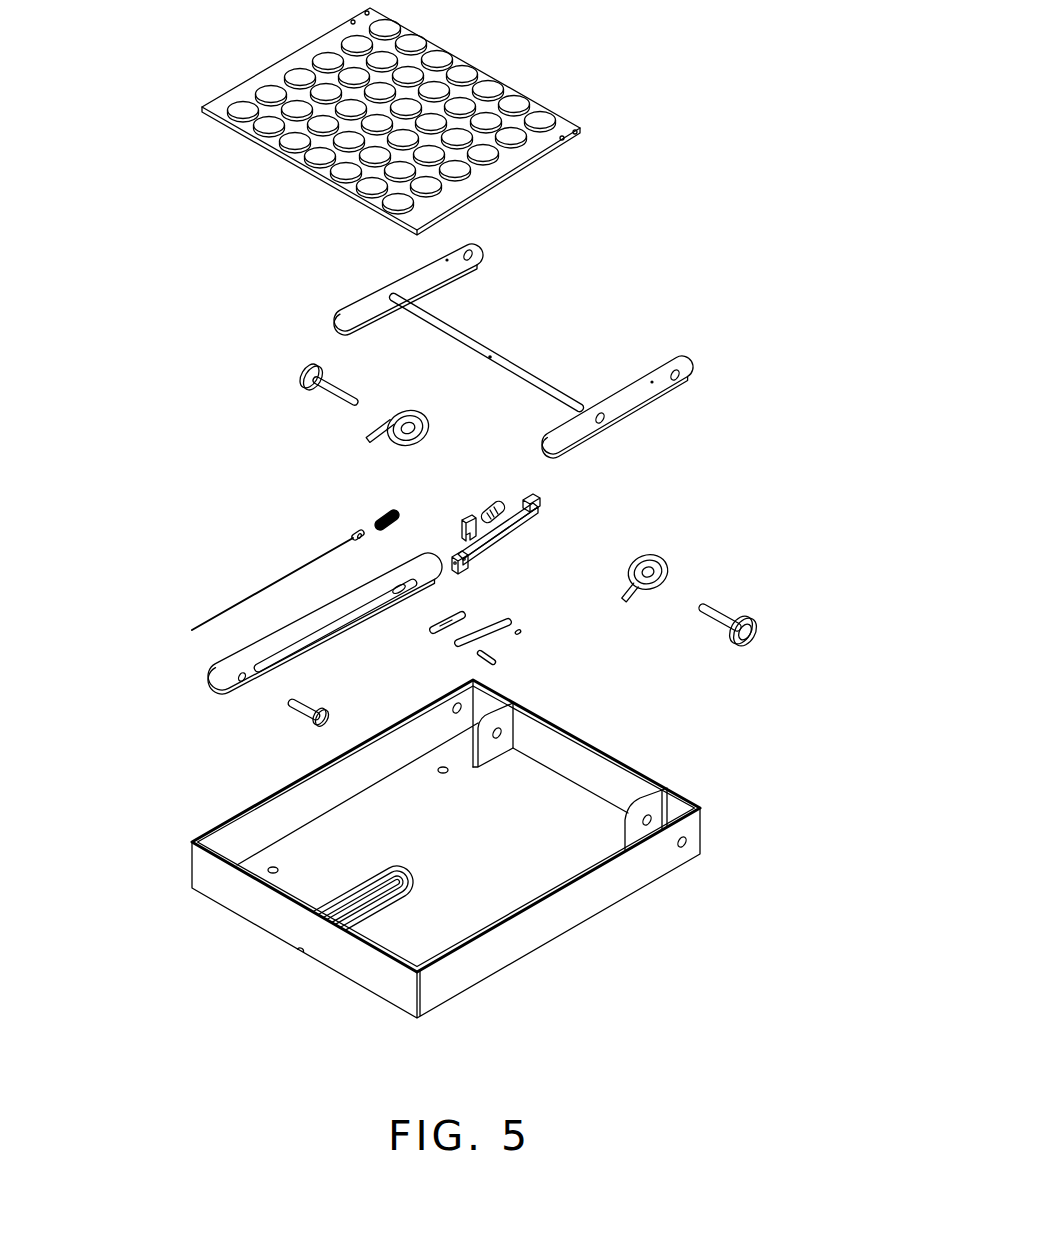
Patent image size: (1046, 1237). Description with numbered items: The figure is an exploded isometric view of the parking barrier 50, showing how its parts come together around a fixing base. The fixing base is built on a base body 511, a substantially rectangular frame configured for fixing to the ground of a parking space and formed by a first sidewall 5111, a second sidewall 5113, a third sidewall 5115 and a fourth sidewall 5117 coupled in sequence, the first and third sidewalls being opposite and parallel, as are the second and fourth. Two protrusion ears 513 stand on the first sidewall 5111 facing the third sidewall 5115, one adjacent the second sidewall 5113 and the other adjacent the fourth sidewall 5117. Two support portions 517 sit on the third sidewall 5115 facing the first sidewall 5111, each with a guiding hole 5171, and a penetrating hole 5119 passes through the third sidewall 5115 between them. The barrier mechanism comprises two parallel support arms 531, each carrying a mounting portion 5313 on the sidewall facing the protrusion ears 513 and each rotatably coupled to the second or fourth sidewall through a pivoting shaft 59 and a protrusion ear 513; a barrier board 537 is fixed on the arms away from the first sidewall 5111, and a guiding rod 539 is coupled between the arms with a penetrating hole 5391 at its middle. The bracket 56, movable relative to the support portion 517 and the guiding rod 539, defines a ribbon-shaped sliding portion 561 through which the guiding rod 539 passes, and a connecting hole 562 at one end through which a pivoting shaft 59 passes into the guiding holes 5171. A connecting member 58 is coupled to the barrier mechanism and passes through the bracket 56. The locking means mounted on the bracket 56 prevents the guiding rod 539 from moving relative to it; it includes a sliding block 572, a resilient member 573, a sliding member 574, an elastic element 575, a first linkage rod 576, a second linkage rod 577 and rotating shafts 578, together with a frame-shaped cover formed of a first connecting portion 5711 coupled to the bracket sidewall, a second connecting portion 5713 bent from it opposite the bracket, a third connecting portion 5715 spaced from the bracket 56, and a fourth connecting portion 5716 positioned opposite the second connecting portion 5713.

The parking barrier 50 is at (625, 30).
The barrier board 537 is at (230, 98).
The mounting portion 5313 is at (470, 272).
The guiding rod 539 is at (538, 349).
The penetrating hole 5391 is at (490, 357).
The support arm 531 is at (635, 405).
The elastic element 575 is at (387, 513).
The resilient member 573 is at (497, 503).
The sliding block 572 is at (463, 528).
The sliding member 574 is at (353, 533).
The fourth connecting portion 5716 is at (527, 505).
The third connecting portion 5715 is at (537, 518).
The second connecting portion 5713 is at (559, 539).
The connecting member 58 is at (248, 597).
The first connecting portion 5711 is at (458, 570).
The pivoting shaft 59 is at (720, 617).
The bracket 56 is at (286, 641).
The sliding portion 561 is at (317, 633).
The second linkage rod 577 is at (432, 628).
The rotating shaft 578 is at (520, 630).
The first linkage rod 576 is at (497, 630).
The connecting hole 562 is at (242, 683).
The first sidewall 5111 is at (563, 752).
The fourth sidewall 5117 is at (262, 800).
The protrusion ear 513 is at (652, 807).
The third sidewall 5115 is at (211, 936).
The second sidewall 5113 is at (642, 873).
The base body 511 is at (450, 878).
The penetrating hole 5119 is at (300, 950).
The support portion 517 is at (339, 971).
The guiding hole 5171 is at (378, 900).